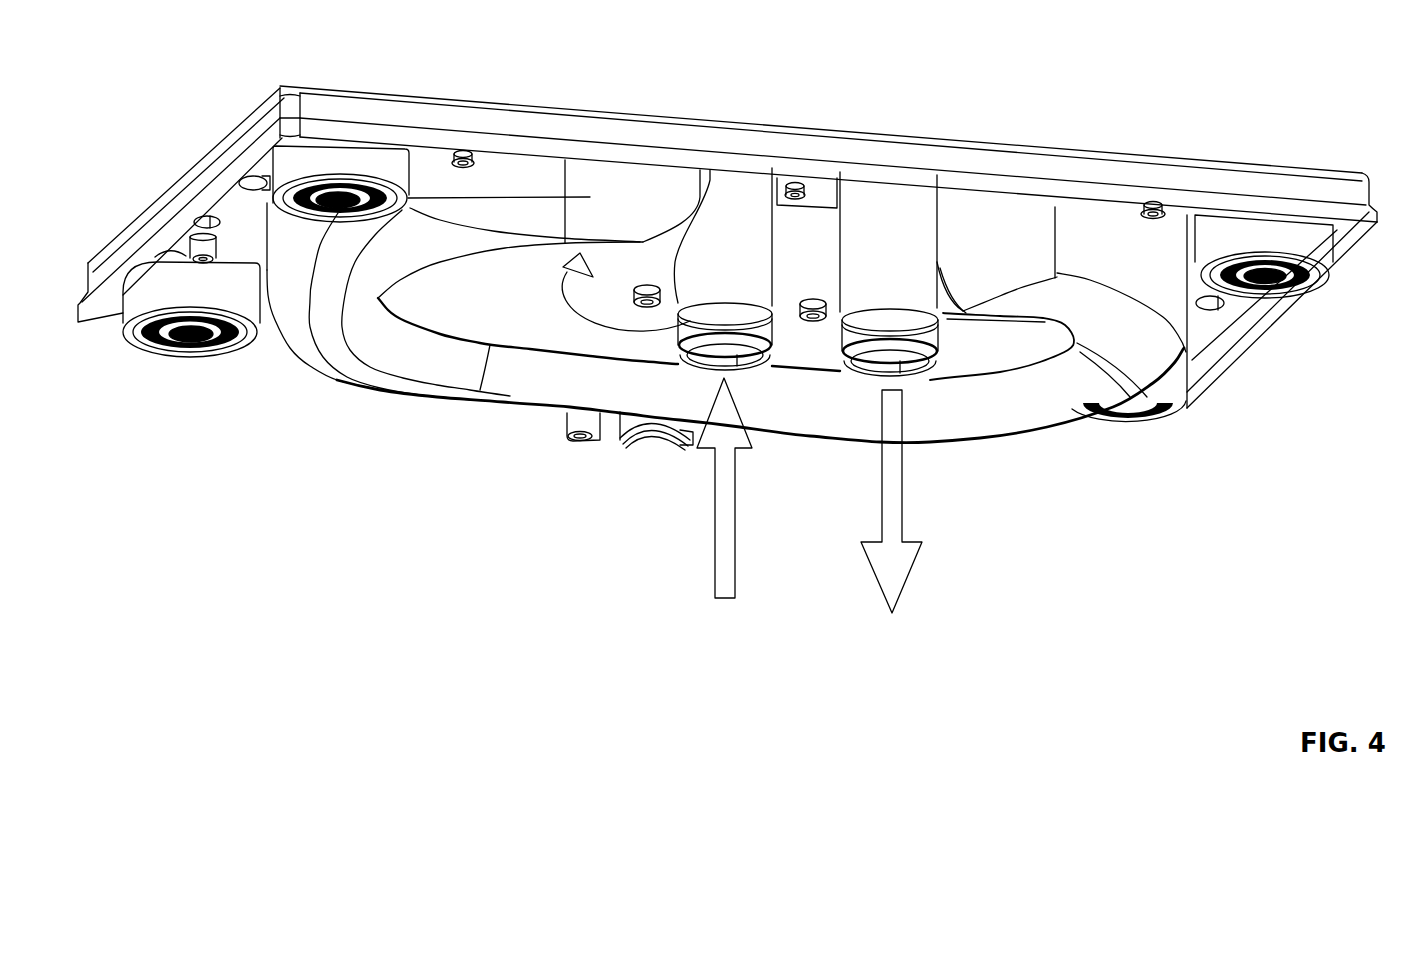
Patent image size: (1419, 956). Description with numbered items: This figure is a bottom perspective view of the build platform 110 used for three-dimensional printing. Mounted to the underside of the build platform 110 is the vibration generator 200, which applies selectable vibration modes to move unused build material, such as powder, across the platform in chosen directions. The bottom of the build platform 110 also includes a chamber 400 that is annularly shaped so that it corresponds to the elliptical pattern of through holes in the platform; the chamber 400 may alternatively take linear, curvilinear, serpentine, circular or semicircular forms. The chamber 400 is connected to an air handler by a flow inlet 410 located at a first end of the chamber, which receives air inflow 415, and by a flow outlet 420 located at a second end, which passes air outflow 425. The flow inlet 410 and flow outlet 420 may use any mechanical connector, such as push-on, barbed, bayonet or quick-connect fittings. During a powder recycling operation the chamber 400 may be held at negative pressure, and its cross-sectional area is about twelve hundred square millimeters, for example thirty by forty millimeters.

The build platform 110 is at (832, 128).
The vibration generator 200 is at (617, 302).
The chamber 400 is at (397, 357).
The flow inlet 410 is at (688, 335).
The air inflow 415 is at (715, 528).
The flow outlet 420 is at (932, 352).
The air outflow 425 is at (913, 561).